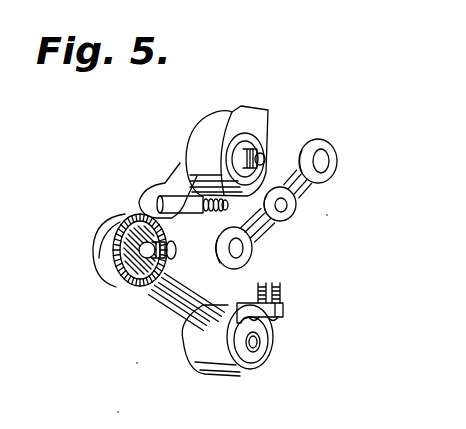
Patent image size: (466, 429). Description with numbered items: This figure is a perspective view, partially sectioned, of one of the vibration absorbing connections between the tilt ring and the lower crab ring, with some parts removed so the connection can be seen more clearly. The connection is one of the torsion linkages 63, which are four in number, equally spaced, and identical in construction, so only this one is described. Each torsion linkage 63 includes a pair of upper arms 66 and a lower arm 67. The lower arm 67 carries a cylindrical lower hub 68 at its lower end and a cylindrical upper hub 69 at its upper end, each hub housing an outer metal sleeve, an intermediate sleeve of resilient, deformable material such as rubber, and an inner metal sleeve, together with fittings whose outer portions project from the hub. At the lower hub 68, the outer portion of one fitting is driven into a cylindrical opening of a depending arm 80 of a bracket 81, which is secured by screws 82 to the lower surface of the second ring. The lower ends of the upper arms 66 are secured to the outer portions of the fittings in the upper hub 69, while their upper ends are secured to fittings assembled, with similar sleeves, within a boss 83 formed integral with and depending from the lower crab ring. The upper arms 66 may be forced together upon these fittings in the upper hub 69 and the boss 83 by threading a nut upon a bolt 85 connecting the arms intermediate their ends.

The torsion linkage 63 is at (212, 118).
The boss 83 is at (249, 108).
The bolt 85 is at (181, 203).
The upper arms 66 is at (300, 195).
The upper hub 69 is at (108, 268).
The lower arm 67 is at (175, 310).
The lower hub 68 is at (205, 367).
The depending arm 80 is at (257, 356).
The bracket 81 is at (282, 313).
The screws 82 is at (281, 319).